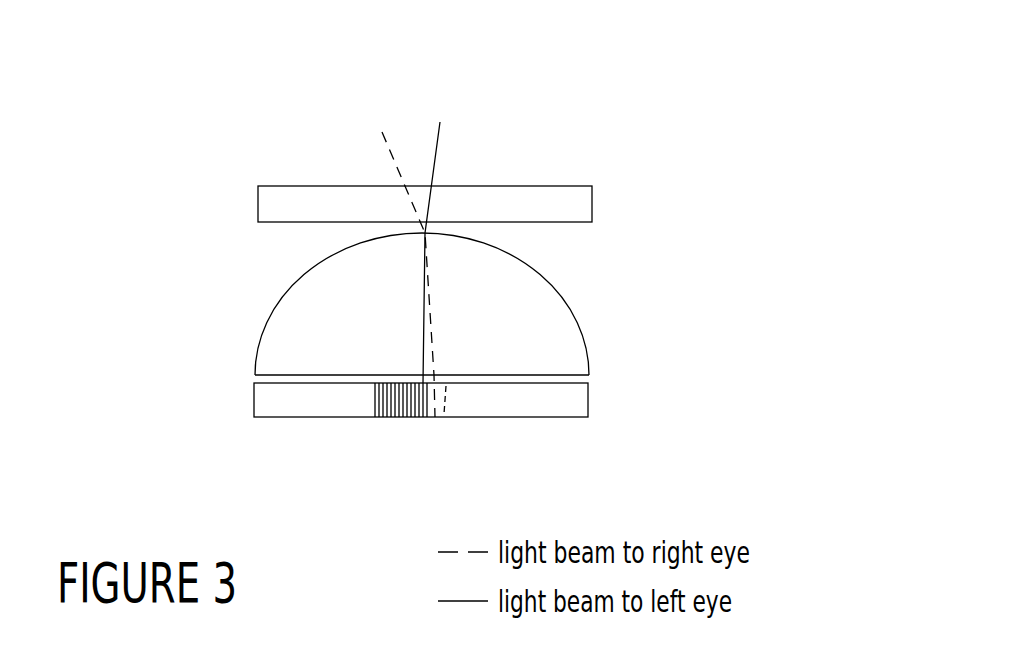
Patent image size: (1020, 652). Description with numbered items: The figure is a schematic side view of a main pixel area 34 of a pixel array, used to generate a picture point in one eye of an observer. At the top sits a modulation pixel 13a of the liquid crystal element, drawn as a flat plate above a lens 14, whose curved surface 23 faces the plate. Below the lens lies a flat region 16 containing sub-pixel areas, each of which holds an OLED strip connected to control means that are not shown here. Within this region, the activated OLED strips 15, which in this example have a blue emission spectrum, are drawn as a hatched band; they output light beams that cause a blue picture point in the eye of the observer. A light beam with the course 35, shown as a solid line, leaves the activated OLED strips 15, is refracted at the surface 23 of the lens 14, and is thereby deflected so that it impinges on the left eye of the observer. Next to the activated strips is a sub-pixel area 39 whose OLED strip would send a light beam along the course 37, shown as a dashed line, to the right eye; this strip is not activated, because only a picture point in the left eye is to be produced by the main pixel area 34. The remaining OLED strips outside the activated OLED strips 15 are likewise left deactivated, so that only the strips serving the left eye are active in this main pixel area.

The main pixel area 34 is at (212, 291).
The modulation pixel 13a is at (572, 200).
The surface of the lens 23 is at (537, 277).
The lens 14 is at (506, 291).
The region having sub-pixel areas 16 is at (570, 398).
The activated OLED strips 15 is at (376, 405).
The sub-pixel area 39 is at (443, 415).
The course of light beam to left eye 35 is at (440, 152).
The course of light beam to right eye 37 is at (387, 162).